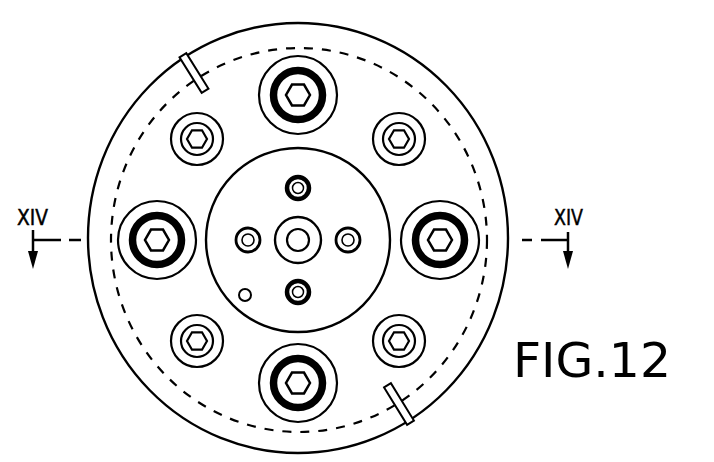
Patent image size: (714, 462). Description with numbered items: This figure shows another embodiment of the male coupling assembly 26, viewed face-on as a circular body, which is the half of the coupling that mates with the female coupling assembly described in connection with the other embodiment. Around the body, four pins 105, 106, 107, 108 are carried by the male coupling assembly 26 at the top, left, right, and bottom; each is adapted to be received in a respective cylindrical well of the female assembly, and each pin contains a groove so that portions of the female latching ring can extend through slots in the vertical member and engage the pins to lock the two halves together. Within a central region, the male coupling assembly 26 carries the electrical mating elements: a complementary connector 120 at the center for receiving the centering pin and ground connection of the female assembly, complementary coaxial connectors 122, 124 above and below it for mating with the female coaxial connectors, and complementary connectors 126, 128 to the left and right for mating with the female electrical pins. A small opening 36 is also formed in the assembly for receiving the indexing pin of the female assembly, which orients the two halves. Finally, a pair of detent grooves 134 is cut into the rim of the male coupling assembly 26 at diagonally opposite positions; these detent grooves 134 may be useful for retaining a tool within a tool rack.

The male coupling assembly 26 is at (540, 105).
The opening 36 is at (249, 300).
The pin 105 is at (329, 364).
The pin 106 is at (191, 259).
The pin 107 is at (336, 120).
The pin 108 is at (408, 218).
The complementary connector 120 is at (288, 262).
The complementary coaxial connector 122 is at (302, 304).
The complementary coaxial connector 124 is at (294, 177).
The complementary connector 126 is at (258, 233).
The complementary connector 128 is at (354, 230).
The detent grooves 134 is at (187, 58).